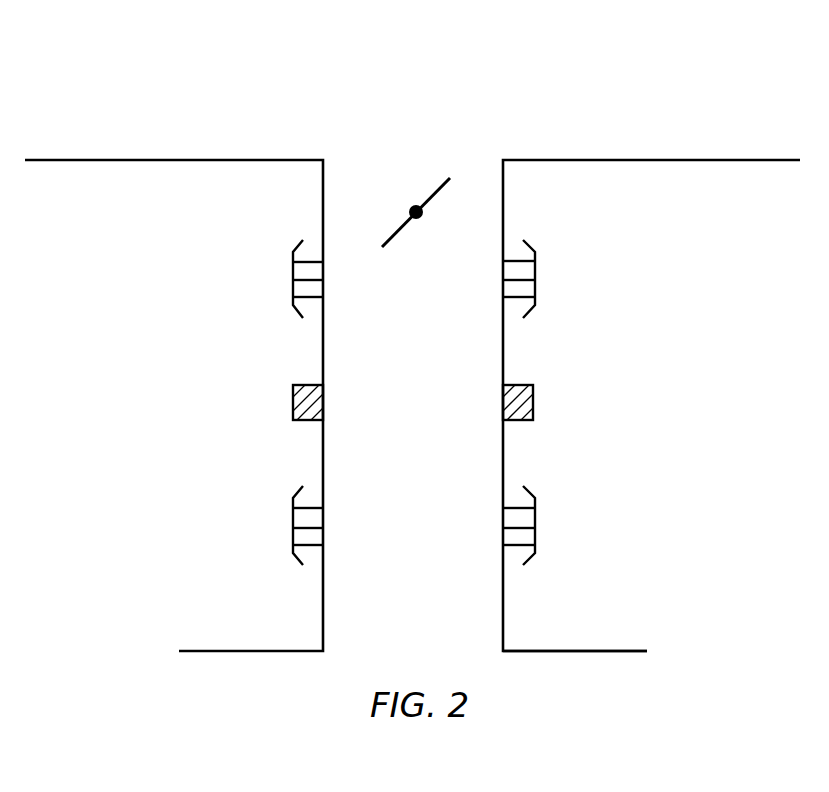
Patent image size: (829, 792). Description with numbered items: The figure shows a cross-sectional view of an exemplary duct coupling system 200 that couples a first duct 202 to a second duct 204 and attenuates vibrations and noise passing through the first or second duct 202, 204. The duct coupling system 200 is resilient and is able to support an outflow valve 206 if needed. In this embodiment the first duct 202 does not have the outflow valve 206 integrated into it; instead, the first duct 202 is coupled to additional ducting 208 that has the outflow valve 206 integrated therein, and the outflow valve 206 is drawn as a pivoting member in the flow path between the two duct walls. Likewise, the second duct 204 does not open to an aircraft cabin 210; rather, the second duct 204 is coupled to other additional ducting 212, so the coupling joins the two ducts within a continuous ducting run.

The duct coupling system 200 is at (566, 400).
The first duct 202 is at (503, 354).
The second duct 204 is at (503, 465).
The outflow valve 206 is at (412, 163).
The additional ducting 208 is at (503, 213).
The aircraft cabin 210 is at (551, 651).
The other additional ducting 212 is at (503, 616).